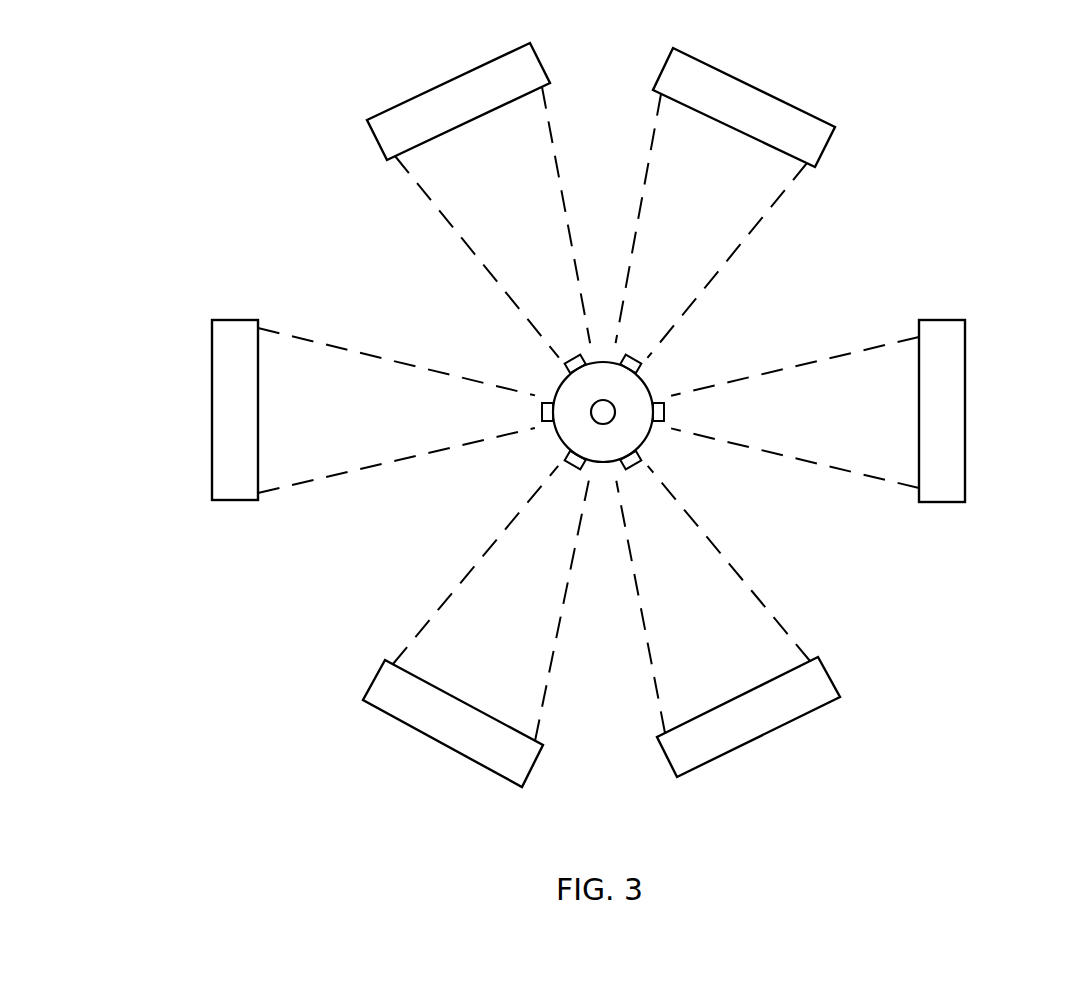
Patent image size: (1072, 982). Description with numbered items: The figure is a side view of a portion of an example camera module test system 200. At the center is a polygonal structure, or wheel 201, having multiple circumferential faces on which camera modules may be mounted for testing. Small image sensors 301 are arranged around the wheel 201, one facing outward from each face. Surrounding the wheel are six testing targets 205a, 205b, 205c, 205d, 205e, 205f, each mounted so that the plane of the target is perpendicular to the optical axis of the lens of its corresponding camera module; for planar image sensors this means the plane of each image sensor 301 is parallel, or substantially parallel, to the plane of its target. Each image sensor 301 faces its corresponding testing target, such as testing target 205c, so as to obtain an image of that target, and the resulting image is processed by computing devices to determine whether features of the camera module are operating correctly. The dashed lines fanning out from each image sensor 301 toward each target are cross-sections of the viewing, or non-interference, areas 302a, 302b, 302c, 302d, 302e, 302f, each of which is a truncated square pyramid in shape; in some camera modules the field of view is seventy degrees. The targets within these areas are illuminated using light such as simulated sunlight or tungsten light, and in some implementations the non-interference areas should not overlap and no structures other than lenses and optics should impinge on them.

The test system 200 is at (937, 141).
The wheel 201 is at (628, 449).
The image sensors 301 is at (637, 466).
The testing target 205a is at (757, 84).
The testing target 205b is at (967, 338).
The testing target 205c is at (758, 738).
The testing target 205d is at (412, 730).
The testing target 205e is at (212, 400).
The testing target 205f is at (445, 81).
The viewing area 302a is at (741, 208).
The viewing area 302b is at (881, 424).
The viewing area 302c is at (741, 654).
The viewing area 302d is at (528, 656).
The viewing area 302e is at (393, 424).
The viewing area 302f is at (534, 212).